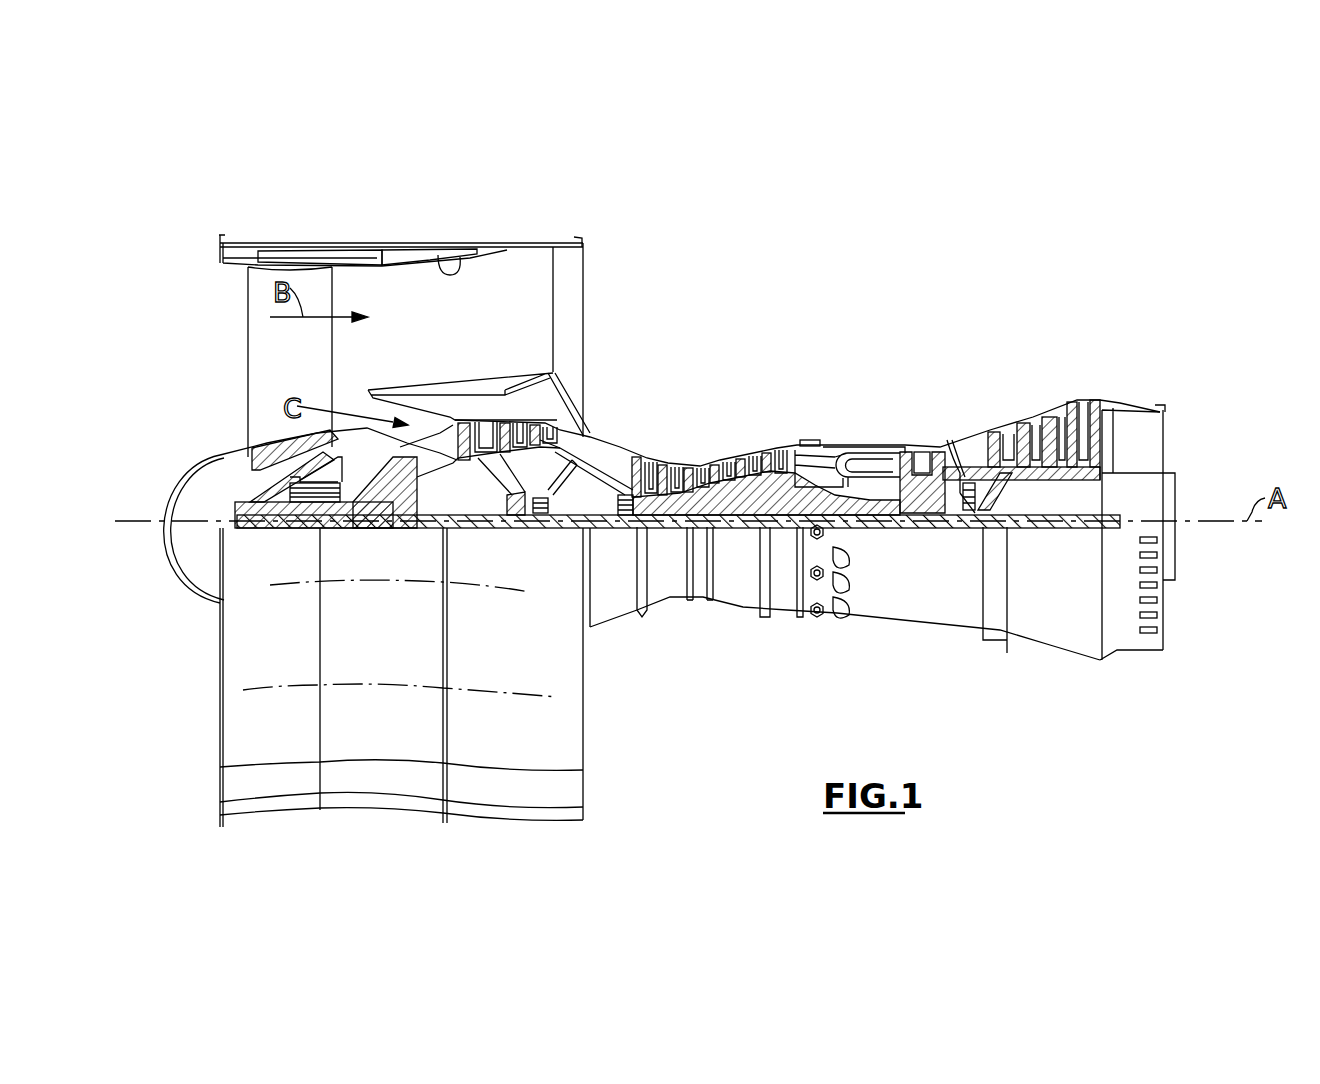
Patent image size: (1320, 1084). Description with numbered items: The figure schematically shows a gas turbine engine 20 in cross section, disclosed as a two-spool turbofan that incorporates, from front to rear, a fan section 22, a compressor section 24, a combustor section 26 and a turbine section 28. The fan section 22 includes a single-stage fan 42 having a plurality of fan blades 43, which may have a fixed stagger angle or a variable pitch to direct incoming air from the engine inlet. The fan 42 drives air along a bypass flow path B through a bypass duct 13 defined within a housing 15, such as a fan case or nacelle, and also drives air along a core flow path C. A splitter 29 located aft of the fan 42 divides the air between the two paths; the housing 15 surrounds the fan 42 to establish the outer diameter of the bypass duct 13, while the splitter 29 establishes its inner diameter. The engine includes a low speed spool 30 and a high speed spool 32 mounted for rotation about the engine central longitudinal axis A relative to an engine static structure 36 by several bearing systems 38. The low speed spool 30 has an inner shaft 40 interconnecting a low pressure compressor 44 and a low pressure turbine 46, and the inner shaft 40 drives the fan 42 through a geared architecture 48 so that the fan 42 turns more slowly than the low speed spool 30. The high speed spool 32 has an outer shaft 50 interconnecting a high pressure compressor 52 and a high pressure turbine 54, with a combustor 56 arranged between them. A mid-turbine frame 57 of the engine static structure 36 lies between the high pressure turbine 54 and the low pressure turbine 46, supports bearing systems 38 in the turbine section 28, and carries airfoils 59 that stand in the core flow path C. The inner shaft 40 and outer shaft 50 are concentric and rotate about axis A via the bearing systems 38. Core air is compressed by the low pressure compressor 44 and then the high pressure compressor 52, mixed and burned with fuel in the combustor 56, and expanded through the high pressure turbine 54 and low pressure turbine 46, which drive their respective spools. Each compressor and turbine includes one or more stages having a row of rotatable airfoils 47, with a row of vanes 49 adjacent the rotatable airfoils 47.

The bypass duct 13 is at (455, 270).
The housing 15 is at (402, 247).
The gas turbine engine 20 is at (868, 284).
The fan section 22 is at (332, 235).
The compressor section 24 is at (634, 430).
The combustor section 26 is at (854, 424).
The turbine section 28 is at (1010, 380).
The splitter 29 is at (362, 427).
The low speed spool 30 is at (740, 537).
The high speed spool 32 is at (792, 468).
The engine static structure 36 is at (780, 625).
The bearing systems 38 is at (543, 530).
The inner shaft 40 is at (600, 527).
The fan 42 is at (302, 373).
The fan blades 43 is at (320, 372).
The low pressure compressor 44 is at (508, 433).
The low pressure turbine 46 is at (1047, 420).
The rotatable airfoils 47 is at (460, 423).
The geared architecture 48 is at (403, 513).
The vanes 49 is at (483, 427).
The outer shaft 50 is at (860, 517).
The high pressure compressor 52 is at (717, 463).
The high pressure turbine 54 is at (937, 452).
The combustor 56 is at (857, 467).
The mid-turbine frame 57 is at (967, 425).
The airfoils 59 is at (993, 498).